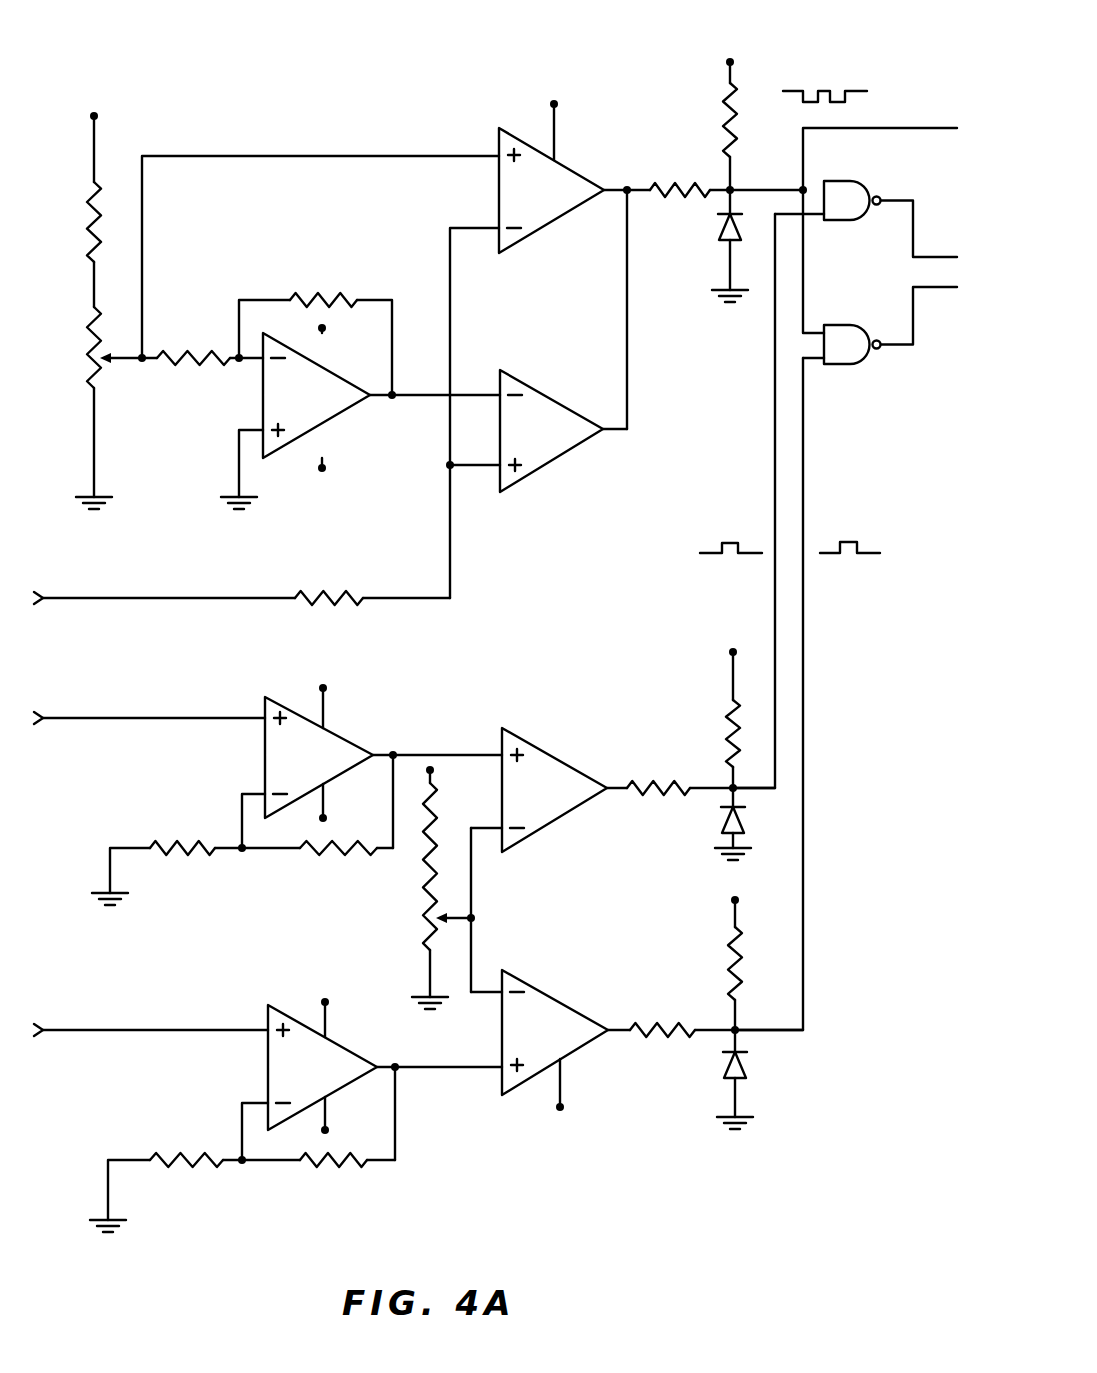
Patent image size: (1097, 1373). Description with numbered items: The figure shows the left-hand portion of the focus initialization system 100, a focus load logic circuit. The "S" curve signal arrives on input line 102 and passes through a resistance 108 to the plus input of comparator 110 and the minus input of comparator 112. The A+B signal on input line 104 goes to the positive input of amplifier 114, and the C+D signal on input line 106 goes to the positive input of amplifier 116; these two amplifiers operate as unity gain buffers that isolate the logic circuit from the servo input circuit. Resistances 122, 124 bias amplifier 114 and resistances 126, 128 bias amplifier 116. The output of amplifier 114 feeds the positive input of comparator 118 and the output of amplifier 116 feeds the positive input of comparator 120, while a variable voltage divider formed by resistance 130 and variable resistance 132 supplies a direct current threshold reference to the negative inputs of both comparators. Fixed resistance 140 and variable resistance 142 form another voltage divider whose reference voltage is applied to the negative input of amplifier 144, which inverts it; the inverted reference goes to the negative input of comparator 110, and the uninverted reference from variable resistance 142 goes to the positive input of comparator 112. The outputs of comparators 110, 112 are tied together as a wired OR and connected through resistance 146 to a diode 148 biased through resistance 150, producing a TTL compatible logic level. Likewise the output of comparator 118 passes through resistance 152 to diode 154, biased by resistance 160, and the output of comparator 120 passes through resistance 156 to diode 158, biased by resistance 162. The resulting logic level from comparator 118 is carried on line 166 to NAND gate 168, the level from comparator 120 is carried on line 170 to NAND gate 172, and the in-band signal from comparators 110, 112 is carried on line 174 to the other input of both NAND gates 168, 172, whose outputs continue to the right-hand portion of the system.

The focus initialization system 100 is at (333, 110).
The input line 102 is at (88, 598).
The input line 104 is at (80, 718).
The input line 106 is at (80, 1030).
The resistance 108 is at (320, 598).
The comparator 110 is at (552, 398).
The comparator 112 is at (572, 169).
The amplifier 114 is at (292, 703).
The amplifier 116 is at (295, 1010).
The comparator 118 is at (538, 746).
The comparator 120 is at (568, 1005).
The resistance 122 is at (172, 843).
The resistance 124 is at (325, 856).
The resistance 126 is at (176, 1165).
The resistance 128 is at (330, 1165).
The resistance 130 is at (427, 835).
The variable resistance 132 is at (420, 926).
The fixed resistance 140 is at (92, 233).
The variable resistance 142 is at (97, 358).
The amplifier 144 is at (346, 413).
The resistance 146 is at (665, 188).
The diode 148 is at (716, 231).
The resistance 150 is at (723, 123).
The resistance 152 is at (645, 786).
The diode 154 is at (728, 829).
The resistance 156 is at (668, 1036).
The diode 158 is at (746, 1066).
The resistance 160 is at (728, 720).
The resistance 162 is at (730, 950).
The line 166 is at (775, 443).
The NAND gate 168 is at (860, 180).
The line 170 is at (806, 746).
The NAND gate 172 is at (845, 364).
The line 174 is at (754, 183).